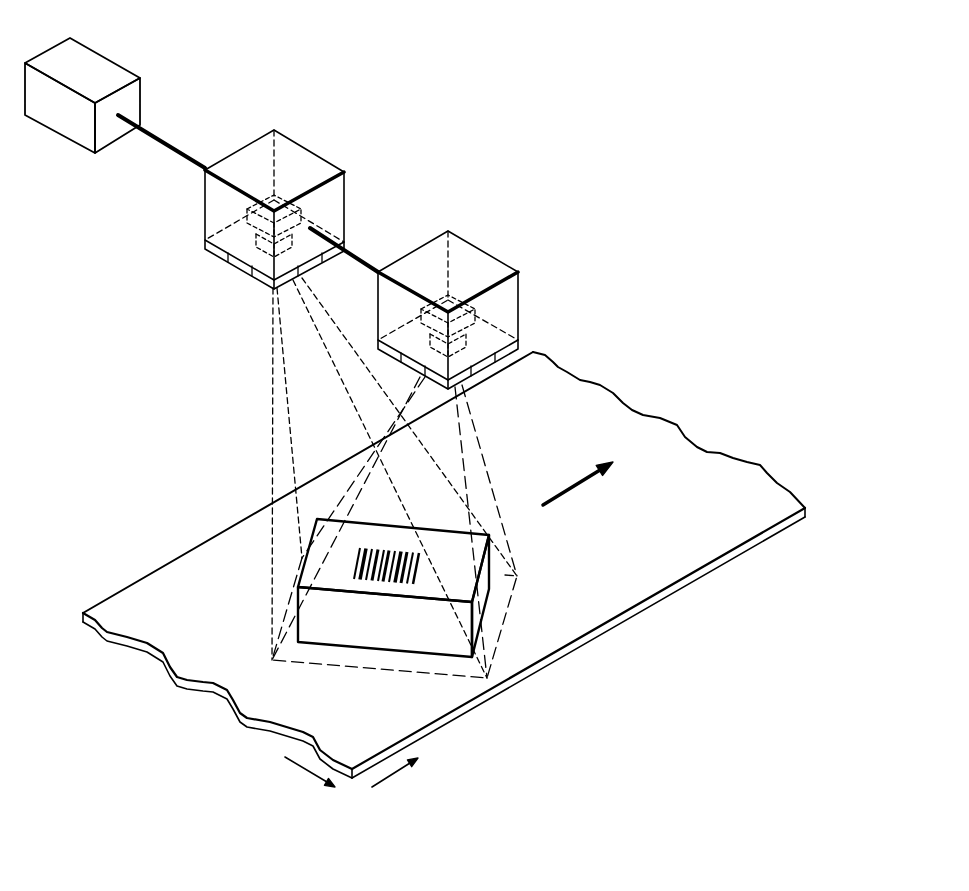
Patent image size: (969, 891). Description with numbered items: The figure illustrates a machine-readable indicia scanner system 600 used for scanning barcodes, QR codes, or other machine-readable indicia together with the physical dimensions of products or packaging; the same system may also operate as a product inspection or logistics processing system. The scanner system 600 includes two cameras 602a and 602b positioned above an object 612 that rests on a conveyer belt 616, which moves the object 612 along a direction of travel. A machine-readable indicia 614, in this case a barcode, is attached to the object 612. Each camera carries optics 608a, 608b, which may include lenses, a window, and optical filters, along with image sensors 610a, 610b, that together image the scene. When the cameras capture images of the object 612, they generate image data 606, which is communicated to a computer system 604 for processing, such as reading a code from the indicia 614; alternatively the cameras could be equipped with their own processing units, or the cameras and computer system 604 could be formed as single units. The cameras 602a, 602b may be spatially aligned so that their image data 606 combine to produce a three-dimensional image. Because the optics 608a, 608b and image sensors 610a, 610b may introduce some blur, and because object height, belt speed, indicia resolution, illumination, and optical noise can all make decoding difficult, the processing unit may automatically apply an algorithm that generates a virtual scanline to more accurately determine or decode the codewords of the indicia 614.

The machine-readable indicia scanner system 600 is at (607, 86).
The camera 602a is at (302, 155).
The camera 602b is at (475, 258).
The computer system 604 is at (95, 66).
The image data 606 is at (180, 147).
The optics 608a is at (267, 250).
The optics 608b is at (470, 340).
The image sensor 610a is at (254, 213).
The image sensor 610b is at (478, 320).
The object 612 is at (487, 582).
The machine-readable indicia 614 is at (392, 585).
The conveyer belt 616 is at (617, 628).